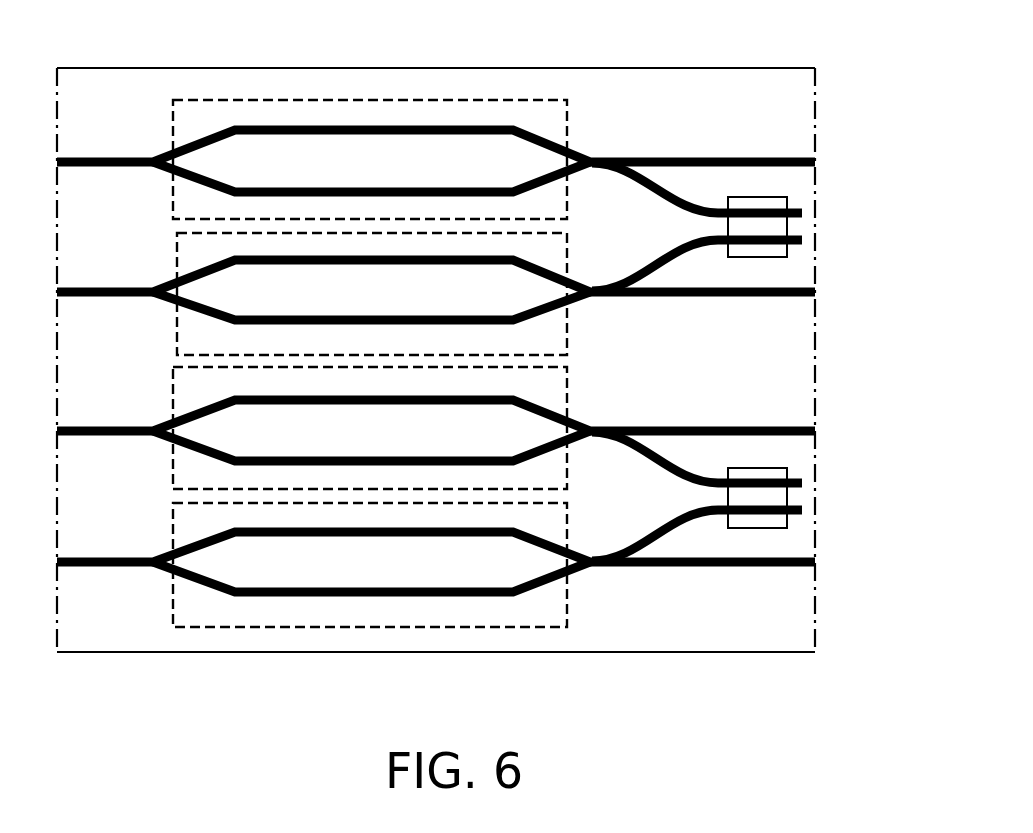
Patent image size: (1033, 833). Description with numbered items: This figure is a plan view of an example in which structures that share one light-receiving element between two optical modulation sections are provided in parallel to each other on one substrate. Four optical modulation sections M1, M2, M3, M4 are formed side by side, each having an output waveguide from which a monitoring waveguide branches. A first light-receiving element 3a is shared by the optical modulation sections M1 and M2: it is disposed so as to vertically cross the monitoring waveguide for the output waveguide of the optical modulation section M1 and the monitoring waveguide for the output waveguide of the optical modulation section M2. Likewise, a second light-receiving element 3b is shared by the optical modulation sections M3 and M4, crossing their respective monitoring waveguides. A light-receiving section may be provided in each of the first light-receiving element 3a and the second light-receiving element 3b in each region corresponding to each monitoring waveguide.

The optical modulation section M1 is at (541, 99).
The optical modulation section M2 is at (567, 240).
The optical modulation section M3 is at (567, 477).
The optical modulation section M4 is at (543, 627).
The first light-receiving element 3a is at (752, 197).
The second light-receiving element 3b is at (752, 528).